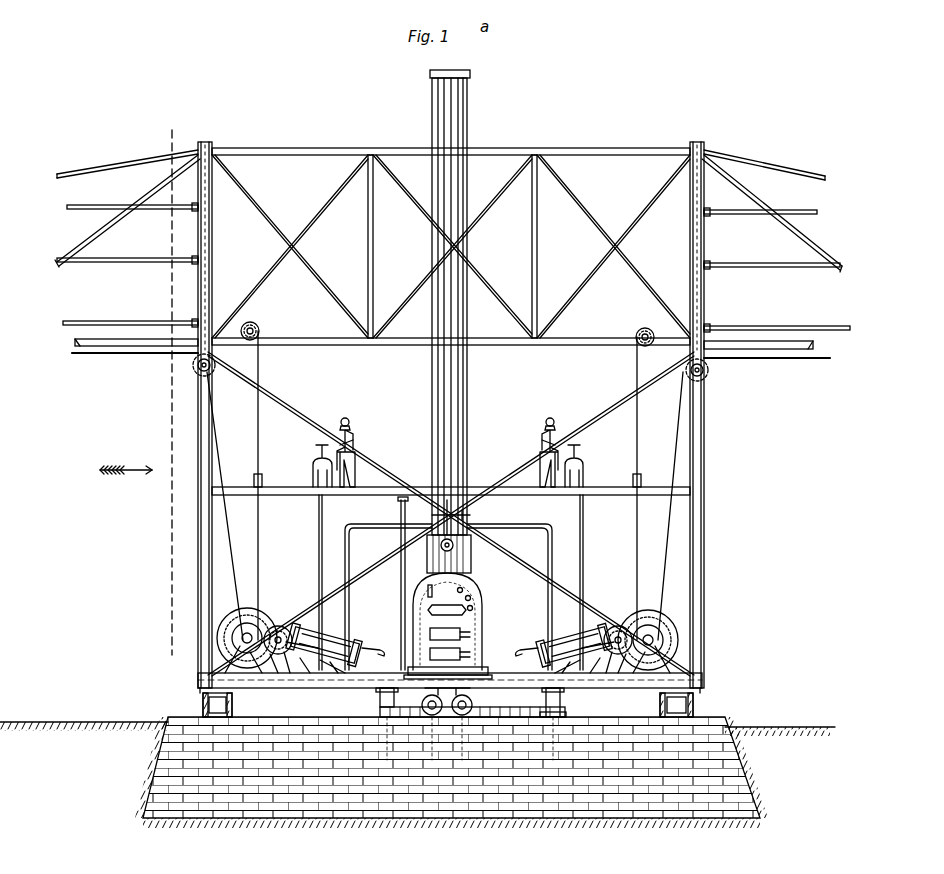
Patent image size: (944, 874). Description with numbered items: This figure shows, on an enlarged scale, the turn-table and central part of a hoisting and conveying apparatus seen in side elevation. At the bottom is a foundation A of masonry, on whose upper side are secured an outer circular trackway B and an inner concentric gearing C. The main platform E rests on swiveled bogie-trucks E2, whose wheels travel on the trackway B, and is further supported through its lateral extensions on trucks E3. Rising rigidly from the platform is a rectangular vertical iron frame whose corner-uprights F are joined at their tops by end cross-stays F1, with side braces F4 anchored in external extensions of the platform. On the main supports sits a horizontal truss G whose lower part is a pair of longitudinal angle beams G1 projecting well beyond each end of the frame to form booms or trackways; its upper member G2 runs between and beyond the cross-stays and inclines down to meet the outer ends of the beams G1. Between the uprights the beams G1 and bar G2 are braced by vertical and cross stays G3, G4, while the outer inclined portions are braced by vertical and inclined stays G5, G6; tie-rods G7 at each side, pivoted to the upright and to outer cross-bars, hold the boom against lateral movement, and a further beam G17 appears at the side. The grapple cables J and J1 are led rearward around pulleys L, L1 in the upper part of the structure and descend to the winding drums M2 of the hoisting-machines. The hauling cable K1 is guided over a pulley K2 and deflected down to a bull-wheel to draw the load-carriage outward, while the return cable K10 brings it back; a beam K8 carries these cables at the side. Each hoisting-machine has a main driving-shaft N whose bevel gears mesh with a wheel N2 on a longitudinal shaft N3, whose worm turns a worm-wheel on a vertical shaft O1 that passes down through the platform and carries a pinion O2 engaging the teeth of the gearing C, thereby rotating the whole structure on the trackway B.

The foundation A is at (430, 838).
The outer circular trackway B is at (200, 715).
The inner concentric gearing C is at (566, 710).
The platform E is at (495, 688).
The bogie-trucks E2 is at (703, 690).
The trucks E3 is at (458, 688).
The corner-uprights F is at (704, 462).
The end cross-stays F1 is at (198, 538).
The side braces F4 is at (588, 340).
The horizontal truss G is at (451, 246).
The angle beams G1 is at (783, 372).
The upper member G2 is at (598, 150).
The vertical stays G3 is at (374, 247).
The cross stays G4 is at (478, 266).
The vertical stays G5 is at (84, 245).
The inclined stays G6 is at (806, 246).
The tie-rods G7 is at (132, 259).
The upper outrigger beam G17 is at (113, 206).
The cable J is at (166, 356).
The second cable J1 is at (734, 360).
The hauling cable K1 is at (636, 548).
The pulley K2 is at (261, 331).
The right cable beam K8 is at (815, 346).
The return cable K10 is at (264, 577).
The pulley L is at (214, 371).
The pulley L1 is at (704, 377).
The winding drums M2 is at (447, 631).
The main driving-shaft N is at (443, 655).
The bevel wheel N2 is at (318, 634).
The longitudinal shaft N3 is at (340, 640).
The vertical shaft O1 is at (364, 644).
The pinion O2 is at (378, 708).